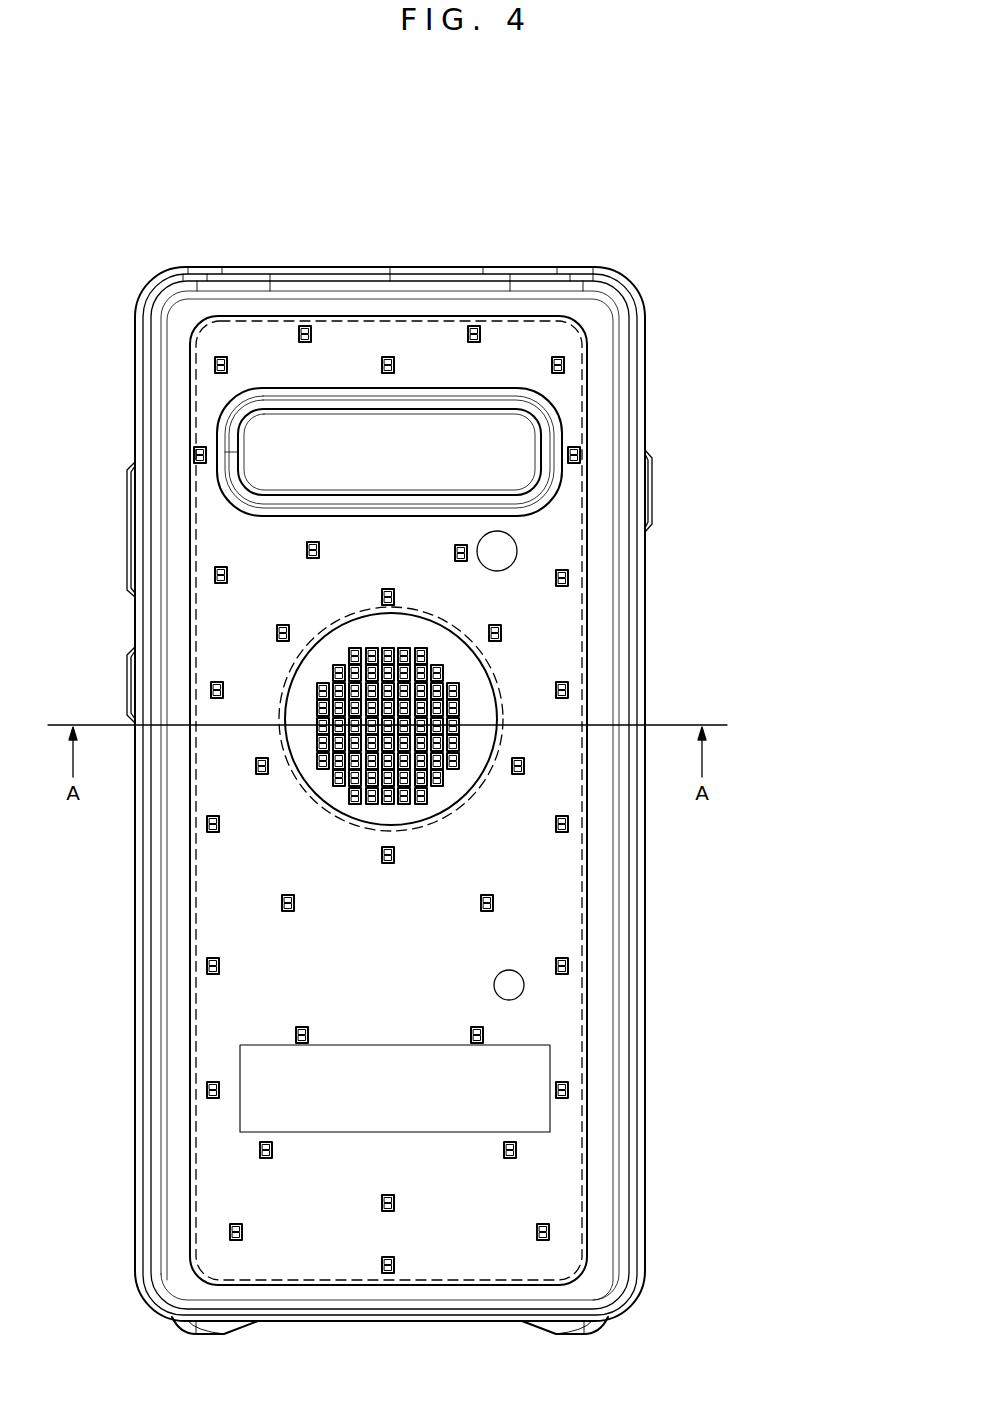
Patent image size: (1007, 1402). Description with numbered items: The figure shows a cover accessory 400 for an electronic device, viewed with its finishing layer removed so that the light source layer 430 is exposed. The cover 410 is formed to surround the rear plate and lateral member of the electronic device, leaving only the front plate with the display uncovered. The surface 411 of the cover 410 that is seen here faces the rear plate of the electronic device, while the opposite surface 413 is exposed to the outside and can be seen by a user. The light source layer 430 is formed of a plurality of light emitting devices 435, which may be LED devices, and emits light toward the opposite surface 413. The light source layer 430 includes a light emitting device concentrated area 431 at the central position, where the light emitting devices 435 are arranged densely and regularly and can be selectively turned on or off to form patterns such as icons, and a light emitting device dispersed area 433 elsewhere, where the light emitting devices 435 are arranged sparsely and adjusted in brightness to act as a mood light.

The cover accessory 400 is at (462, 738).
The cover 410 is at (468, 791).
The surface 411 is at (577, 330).
The opposite surface 413 is at (600, 367).
The light source layer 430 is at (538, 719).
The light emitting device concentrated area 431 is at (492, 680).
The light emitting device dispersed area 433 is at (583, 618).
The light emitting device 435 is at (467, 552).